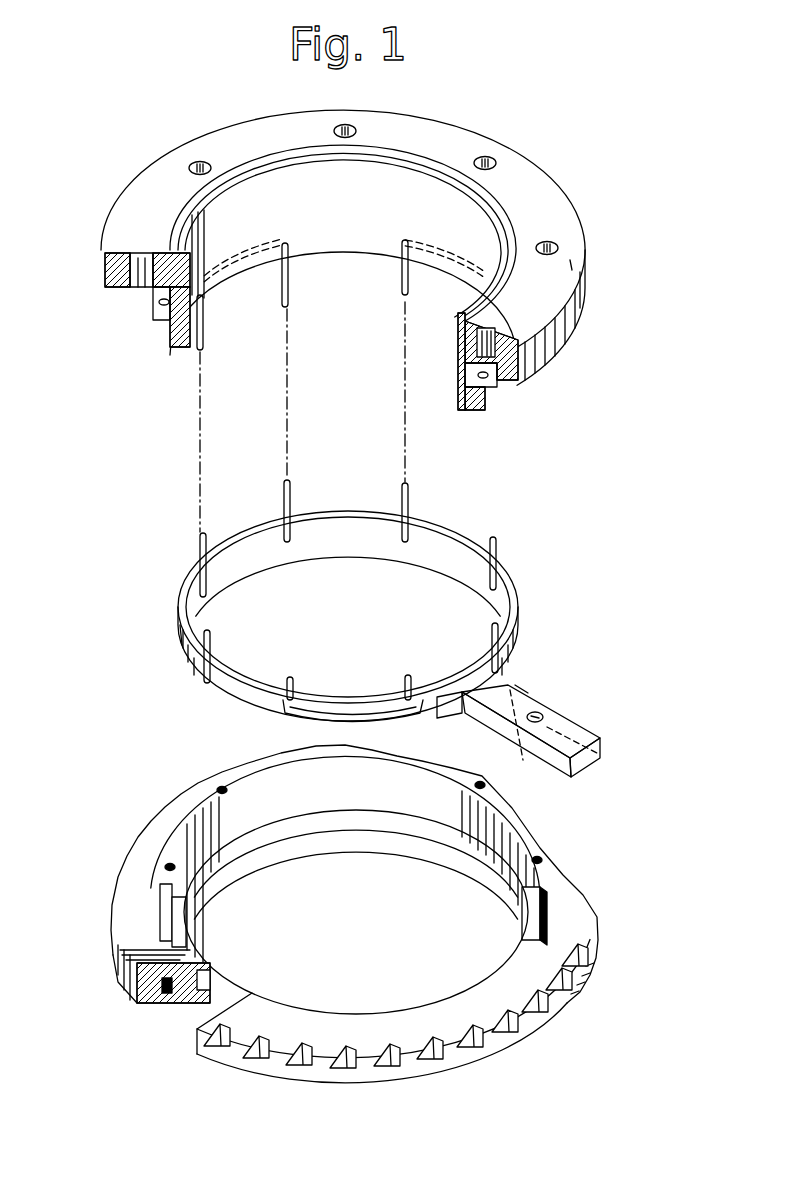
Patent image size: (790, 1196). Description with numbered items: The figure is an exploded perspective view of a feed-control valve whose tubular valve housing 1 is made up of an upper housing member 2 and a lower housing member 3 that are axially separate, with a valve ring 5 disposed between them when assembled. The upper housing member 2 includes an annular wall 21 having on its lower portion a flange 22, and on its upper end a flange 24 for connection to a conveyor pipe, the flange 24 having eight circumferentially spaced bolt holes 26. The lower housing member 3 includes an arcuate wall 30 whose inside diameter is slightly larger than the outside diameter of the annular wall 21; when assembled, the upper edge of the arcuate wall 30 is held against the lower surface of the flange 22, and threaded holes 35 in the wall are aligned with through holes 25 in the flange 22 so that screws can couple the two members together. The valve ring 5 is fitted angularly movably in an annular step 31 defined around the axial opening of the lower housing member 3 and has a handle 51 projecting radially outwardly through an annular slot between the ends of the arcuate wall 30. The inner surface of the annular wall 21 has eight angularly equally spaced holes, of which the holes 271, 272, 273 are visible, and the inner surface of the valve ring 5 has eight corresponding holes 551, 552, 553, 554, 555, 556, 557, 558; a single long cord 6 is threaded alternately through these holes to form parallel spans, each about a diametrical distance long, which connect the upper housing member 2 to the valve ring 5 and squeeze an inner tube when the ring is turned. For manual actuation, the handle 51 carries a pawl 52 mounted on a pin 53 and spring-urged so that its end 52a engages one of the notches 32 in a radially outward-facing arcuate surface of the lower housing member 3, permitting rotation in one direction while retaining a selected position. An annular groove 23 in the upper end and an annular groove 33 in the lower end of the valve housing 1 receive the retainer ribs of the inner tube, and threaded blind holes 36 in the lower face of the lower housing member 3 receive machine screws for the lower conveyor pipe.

The valve housing 1 is at (84, 151).
The upper housing member 2 is at (421, 113).
The lower housing member 3 is at (109, 942).
The valve ring 5 is at (212, 693).
The cord 6 is at (283, 500).
The annular wall 21 is at (458, 369).
The flange 22 is at (160, 331).
The annular groove 23 is at (312, 291).
The flange 24 is at (577, 238).
The through holes 25 is at (159, 303).
The bolt holes 26 is at (200, 162).
The hole 271 is at (405, 240).
The hole 272 is at (287, 243).
The hole 273 is at (206, 301).
The arcuate wall 30 is at (196, 806).
The annular step 31 is at (216, 906).
The notches 32 is at (218, 1046).
The annular groove 33 is at (200, 992).
The threaded holes 35 is at (222, 787).
The threaded blind holes 36 is at (161, 992).
The handle 51 is at (606, 746).
The pawl 52 is at (544, 765).
The end of pawl 52a is at (523, 681).
The pin 53 is at (541, 716).
The hole 551 is at (405, 545).
The hole 552 is at (288, 545).
The hole 553 is at (210, 597).
The hole 554 is at (186, 642).
The hole 555 is at (288, 696).
The hole 556 is at (407, 702).
The hole 557 is at (510, 670).
The hole 558 is at (492, 592).